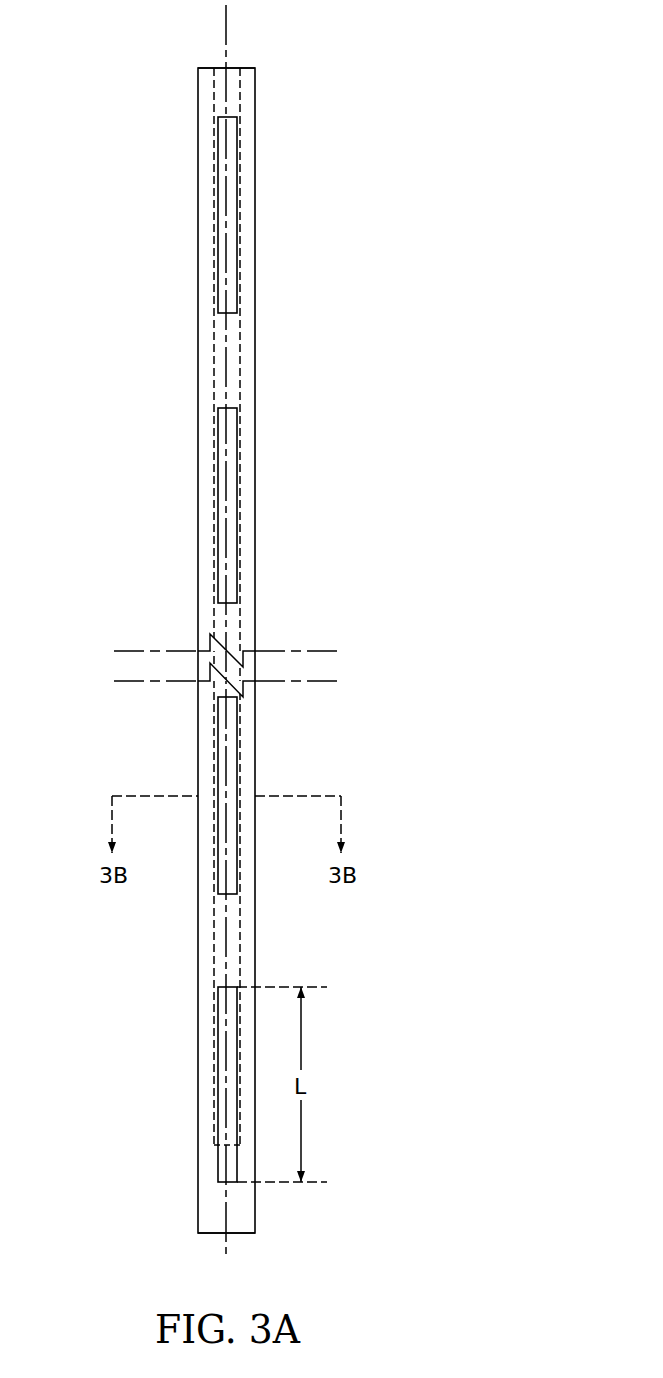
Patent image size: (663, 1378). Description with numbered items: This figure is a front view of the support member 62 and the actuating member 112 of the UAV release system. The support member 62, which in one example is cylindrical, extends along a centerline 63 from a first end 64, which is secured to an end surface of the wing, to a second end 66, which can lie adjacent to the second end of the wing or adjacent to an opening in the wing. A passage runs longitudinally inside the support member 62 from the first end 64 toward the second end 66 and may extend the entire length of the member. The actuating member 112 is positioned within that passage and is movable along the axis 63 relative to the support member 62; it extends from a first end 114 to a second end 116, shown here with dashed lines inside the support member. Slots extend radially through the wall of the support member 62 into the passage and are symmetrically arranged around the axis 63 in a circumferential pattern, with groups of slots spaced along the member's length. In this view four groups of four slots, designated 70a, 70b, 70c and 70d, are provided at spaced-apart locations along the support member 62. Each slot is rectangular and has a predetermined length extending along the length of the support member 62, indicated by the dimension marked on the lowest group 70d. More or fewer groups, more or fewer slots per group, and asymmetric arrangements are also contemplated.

The support member 62 is at (125, 328).
The centerline 63 is at (226, 23).
The first end 64 is at (188, 107).
The second end 66 is at (168, 1238).
The slots 70a is at (225, 252).
The slots 70b is at (225, 505).
The slots 70c is at (225, 760).
The slots 70d is at (225, 1027).
The actuating member 112 is at (222, 205).
The first end 114 is at (242, 91).
The second end 116 is at (223, 1128).